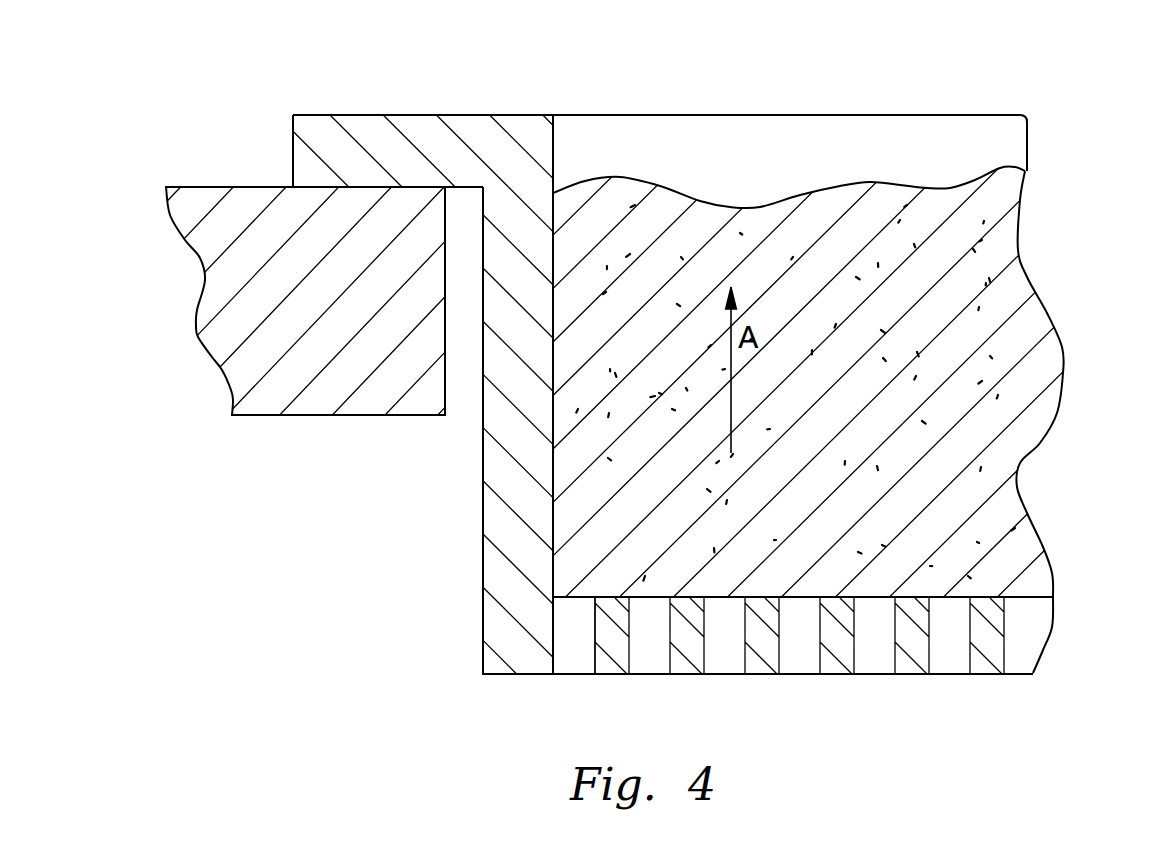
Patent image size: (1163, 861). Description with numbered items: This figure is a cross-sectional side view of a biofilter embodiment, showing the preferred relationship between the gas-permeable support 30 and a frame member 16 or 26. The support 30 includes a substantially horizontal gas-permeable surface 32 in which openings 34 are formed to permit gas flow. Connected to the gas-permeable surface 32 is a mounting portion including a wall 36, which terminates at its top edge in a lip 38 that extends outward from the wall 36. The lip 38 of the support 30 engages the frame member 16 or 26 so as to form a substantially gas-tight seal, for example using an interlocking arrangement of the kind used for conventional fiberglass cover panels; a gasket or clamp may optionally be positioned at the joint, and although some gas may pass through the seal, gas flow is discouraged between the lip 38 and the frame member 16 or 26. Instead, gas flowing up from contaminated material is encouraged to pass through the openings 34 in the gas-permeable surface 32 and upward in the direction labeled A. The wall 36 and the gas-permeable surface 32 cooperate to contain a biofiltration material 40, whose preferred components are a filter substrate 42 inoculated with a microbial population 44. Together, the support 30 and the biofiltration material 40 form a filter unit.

The frame member 16 is at (249, 355).
The frame member 26 is at (295, 417).
The gas-permeable support 30 is at (653, 388).
The gas-permeable surface 32 is at (838, 675).
The openings 34 is at (539, 676).
The wall 36 is at (477, 463).
The lip 38 is at (360, 113).
The biofiltration material 40 is at (854, 381).
The filter substrate 42 is at (987, 360).
The microbial population 44 is at (967, 488).